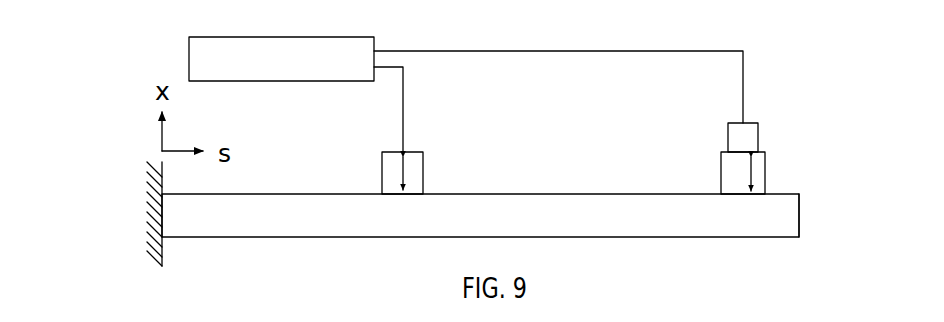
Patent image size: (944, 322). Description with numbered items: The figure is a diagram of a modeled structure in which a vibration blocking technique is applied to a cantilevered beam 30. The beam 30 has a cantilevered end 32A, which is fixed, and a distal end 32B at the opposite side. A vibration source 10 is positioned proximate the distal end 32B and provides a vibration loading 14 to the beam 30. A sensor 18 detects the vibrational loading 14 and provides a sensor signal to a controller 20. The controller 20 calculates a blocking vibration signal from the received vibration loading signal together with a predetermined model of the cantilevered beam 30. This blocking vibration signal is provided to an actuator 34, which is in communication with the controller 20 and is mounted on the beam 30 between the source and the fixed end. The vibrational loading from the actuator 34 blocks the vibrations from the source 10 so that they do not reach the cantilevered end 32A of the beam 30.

The vibration source 10 is at (721, 178).
The vibration loading 14 is at (765, 170).
The sensor 18 is at (758, 125).
The controller 20 is at (189, 38).
The cantilevered beam 30 is at (323, 193).
The cantilevered end 32A is at (162, 237).
The distal end 32B is at (799, 222).
The actuator 34 is at (423, 152).